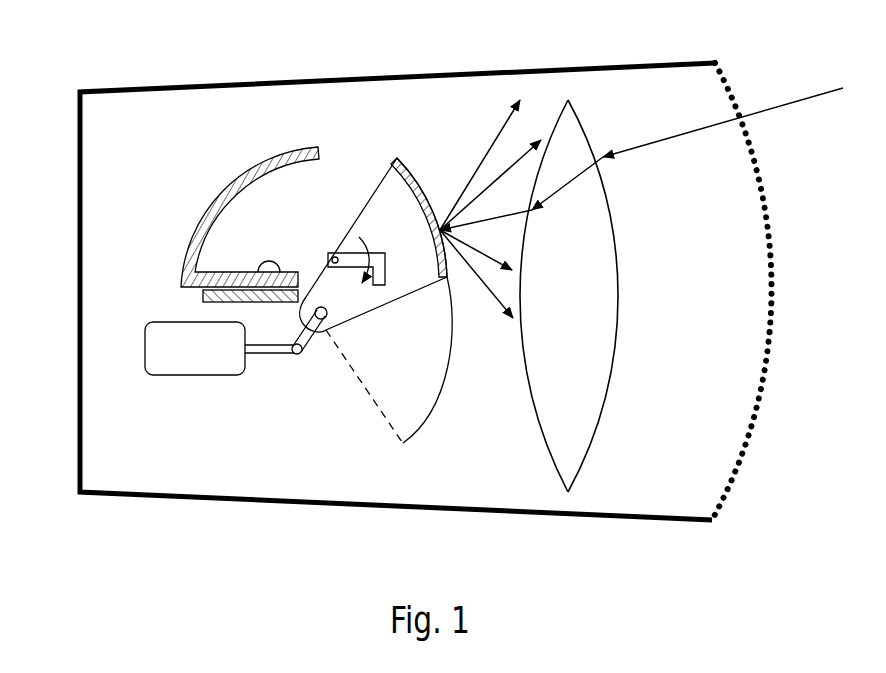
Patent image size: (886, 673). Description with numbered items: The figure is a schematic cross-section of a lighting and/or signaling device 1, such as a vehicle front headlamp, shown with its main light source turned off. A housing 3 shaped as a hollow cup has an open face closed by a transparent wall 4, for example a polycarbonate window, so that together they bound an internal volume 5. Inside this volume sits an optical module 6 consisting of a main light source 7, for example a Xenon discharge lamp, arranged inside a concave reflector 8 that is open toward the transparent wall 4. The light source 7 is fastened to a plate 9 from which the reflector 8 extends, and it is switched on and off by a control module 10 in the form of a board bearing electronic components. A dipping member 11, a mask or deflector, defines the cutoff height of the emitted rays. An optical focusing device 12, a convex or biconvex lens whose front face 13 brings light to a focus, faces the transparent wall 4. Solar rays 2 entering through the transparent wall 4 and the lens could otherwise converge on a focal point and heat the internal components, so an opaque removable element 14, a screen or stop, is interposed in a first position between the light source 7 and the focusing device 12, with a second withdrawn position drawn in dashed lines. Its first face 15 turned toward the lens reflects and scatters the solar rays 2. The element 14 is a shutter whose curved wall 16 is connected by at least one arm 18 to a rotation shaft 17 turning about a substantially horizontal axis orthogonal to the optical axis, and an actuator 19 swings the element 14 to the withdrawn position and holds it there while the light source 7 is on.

The lighting and/or signaling device 1 is at (179, 526).
The solar rays 2 is at (770, 110).
The housing 3 is at (217, 503).
The transparent wall 4 is at (761, 397).
The internal volume 5 is at (178, 426).
The optical module 6 is at (237, 152).
The main light source 7 is at (270, 261).
The concave reflector 8 is at (221, 188).
The plate 9 is at (186, 268).
The control module 10 is at (203, 294).
The dipping member 11 is at (340, 252).
The optical focusing device 12 is at (559, 296).
The front face 13 is at (612, 382).
The opaque removable element 14 is at (427, 300).
The first face 15 is at (398, 157).
The curved wall 16 is at (421, 192).
The rotation shaft 17 is at (330, 345).
The arm 18 is at (349, 290).
The actuator 19 is at (183, 361).